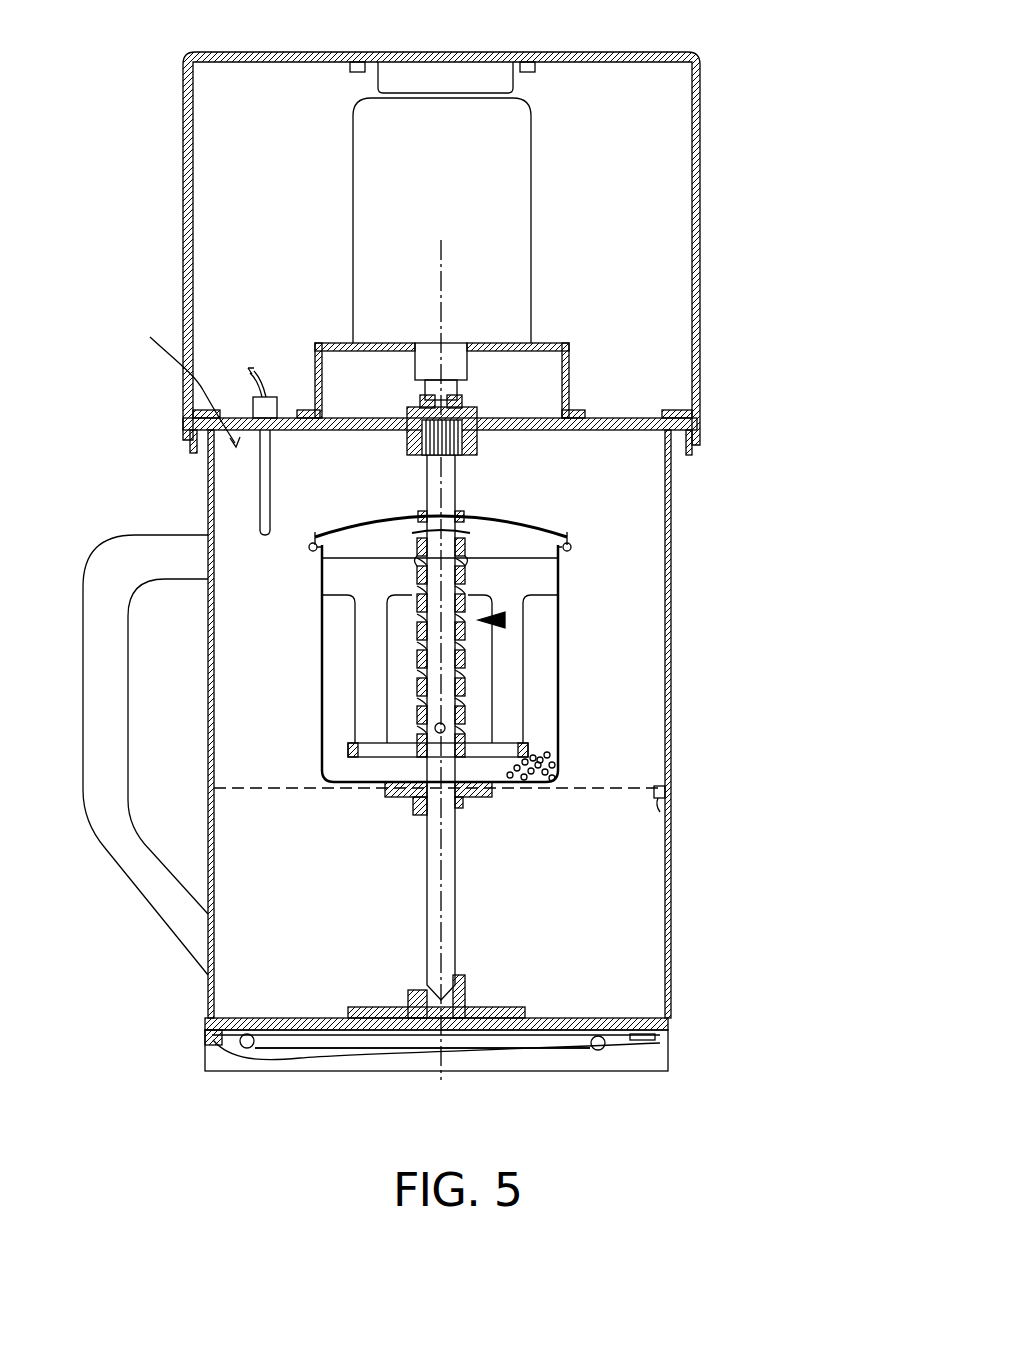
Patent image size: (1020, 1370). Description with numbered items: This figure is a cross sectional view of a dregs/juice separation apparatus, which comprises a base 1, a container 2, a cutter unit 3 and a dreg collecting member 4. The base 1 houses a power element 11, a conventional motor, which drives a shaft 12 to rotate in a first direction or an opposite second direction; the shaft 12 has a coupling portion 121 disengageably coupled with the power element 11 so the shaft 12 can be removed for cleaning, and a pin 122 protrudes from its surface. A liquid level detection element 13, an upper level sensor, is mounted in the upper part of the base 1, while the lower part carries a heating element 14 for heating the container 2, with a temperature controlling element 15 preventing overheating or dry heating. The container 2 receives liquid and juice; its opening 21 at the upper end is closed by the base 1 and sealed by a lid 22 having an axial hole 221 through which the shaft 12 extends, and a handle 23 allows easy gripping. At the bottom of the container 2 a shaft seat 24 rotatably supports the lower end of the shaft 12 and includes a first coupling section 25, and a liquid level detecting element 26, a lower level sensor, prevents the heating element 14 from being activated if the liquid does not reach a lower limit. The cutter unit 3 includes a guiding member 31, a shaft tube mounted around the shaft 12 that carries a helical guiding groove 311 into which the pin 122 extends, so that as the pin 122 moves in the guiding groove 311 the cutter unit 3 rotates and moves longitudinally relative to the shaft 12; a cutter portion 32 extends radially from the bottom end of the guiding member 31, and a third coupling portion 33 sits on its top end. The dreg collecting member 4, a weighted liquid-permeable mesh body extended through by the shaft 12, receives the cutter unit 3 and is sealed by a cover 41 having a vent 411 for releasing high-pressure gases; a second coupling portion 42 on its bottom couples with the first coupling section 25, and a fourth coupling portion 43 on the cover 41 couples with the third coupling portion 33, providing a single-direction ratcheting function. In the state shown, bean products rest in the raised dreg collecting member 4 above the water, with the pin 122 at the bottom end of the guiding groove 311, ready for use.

The base 1 is at (700, 158).
The power element 11 is at (520, 210).
The shaft 12 is at (455, 488).
The coupling portion 121 is at (442, 438).
The pin 122 is at (437, 730).
The liquid level detection element 13 is at (265, 470).
The heating element 14 is at (568, 1043).
The temperature controlling element 15 is at (641, 1040).
The container 2 is at (670, 768).
The opening 21 is at (186, 372).
The lid 22 is at (610, 430).
The axial hole 221 is at (480, 418).
The handle 23 is at (158, 921).
The shaft seat 24 is at (370, 1010).
The first coupling section 25 is at (463, 982).
The liquid level detecting element 26 is at (655, 793).
The cutter unit 3 is at (505, 620).
The guiding member 31 is at (462, 688).
The guiding groove 311 is at (455, 673).
The cutter portion 32 is at (530, 747).
The third coupling portion 33 is at (413, 533).
The dreg collecting member 4 is at (560, 650).
The cover 41 is at (465, 524).
The vent 411 is at (495, 512).
The second coupling portion 42 is at (460, 800).
The fourth coupling portion 43 is at (560, 565).